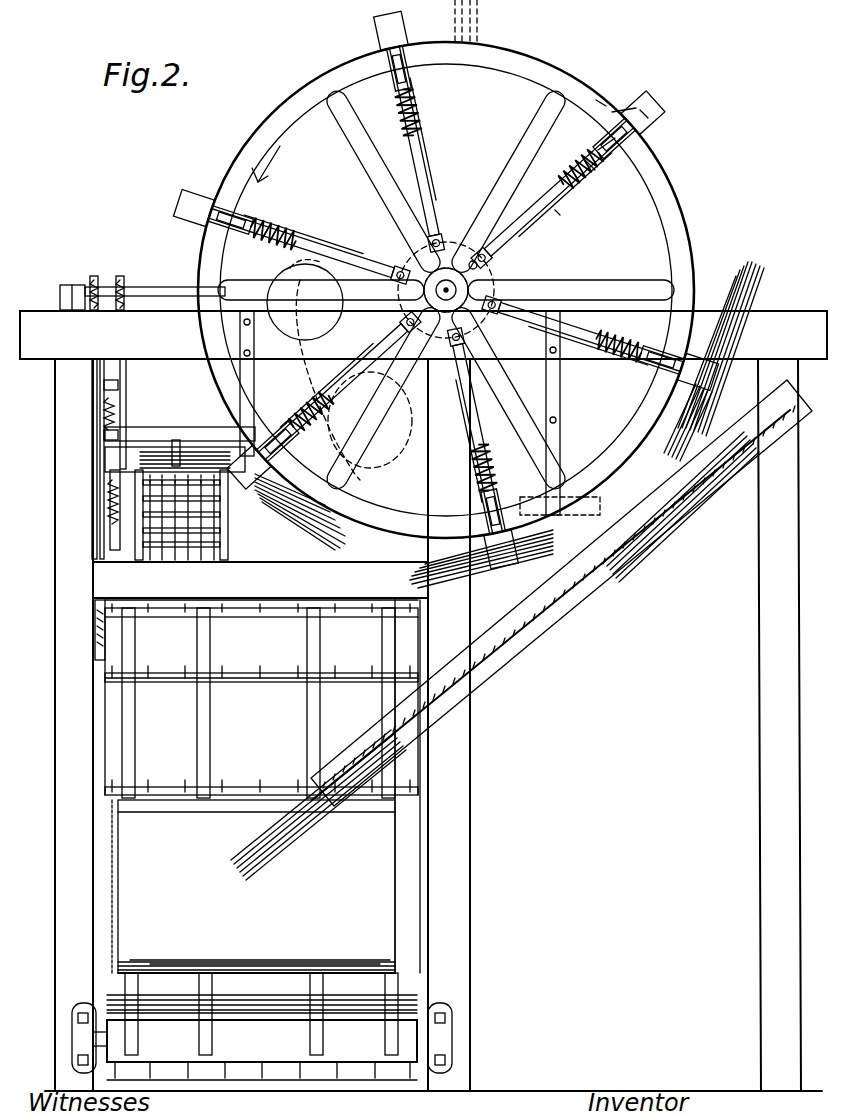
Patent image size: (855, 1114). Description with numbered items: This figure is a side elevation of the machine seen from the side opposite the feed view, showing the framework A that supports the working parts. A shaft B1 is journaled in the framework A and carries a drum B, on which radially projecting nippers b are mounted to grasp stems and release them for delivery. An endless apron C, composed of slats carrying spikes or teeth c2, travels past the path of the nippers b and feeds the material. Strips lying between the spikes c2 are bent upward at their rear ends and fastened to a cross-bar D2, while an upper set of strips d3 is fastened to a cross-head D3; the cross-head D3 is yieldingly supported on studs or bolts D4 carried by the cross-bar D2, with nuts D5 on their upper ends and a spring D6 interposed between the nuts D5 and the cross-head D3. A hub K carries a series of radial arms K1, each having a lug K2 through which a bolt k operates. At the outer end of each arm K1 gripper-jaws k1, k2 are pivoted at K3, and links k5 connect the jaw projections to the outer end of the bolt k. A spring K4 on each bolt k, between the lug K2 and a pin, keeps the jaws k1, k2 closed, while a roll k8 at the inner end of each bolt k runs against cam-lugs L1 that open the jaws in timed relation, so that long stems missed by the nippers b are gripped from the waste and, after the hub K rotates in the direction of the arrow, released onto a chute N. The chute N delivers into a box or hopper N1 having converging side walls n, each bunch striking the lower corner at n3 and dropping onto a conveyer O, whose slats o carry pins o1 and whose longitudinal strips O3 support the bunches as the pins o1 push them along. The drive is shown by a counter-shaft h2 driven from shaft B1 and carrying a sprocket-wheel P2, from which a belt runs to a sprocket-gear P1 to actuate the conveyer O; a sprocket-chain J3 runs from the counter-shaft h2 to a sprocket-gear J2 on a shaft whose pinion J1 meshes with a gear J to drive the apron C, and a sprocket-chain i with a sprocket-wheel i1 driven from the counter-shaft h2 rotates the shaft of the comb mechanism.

The drum B is at (650, 225).
The shaft B1 is at (478, 178).
The hub K is at (482, 272).
The arm K1 is at (428, 168).
The lug K2 is at (598, 150).
The pivot of gripper-jaws K3 is at (620, 112).
The spring K4 is at (585, 165).
The bolt k is at (555, 210).
The gripper-jaw k1 is at (502, 560).
The gripper-jaw k2 is at (645, 114).
The link k5 is at (600, 102).
The roll k8 is at (470, 260).
The cam-lug L1 is at (480, 287).
The sprocket-chain i is at (405, 258).
The sprocket-wheel i1 is at (420, 262).
The nipper b is at (478, 18).
The framework A is at (423, 701).
The counter-shaft h2 is at (150, 286).
The sprocket-wheel P2 is at (90, 282).
The sprocket-gear J2 is at (114, 280).
The sprocket-chain J3 is at (128, 378).
The pinion J1 is at (100, 500).
The gear J is at (114, 550).
The cross-bar D2 is at (100, 460).
The cross-head D3 is at (140, 432).
The stud or bolt D4 is at (110, 386).
The nut D5 is at (108, 396).
The spring D6 is at (106, 414).
The wires, slats, or strips d3 is at (176, 445).
The endless apron C is at (205, 498).
The spikes or teeth c2 is at (201, 555).
The chute N is at (595, 573).
The box or casing N1 is at (266, 786).
The side wall n is at (256, 831).
The lower corner of hopper n3 is at (122, 972).
The conveyer O is at (261, 697).
The strip O3 is at (200, 733).
The slat o is at (243, 682).
The pin o1 is at (296, 668).
The sprocket-gear P1 is at (98, 652).